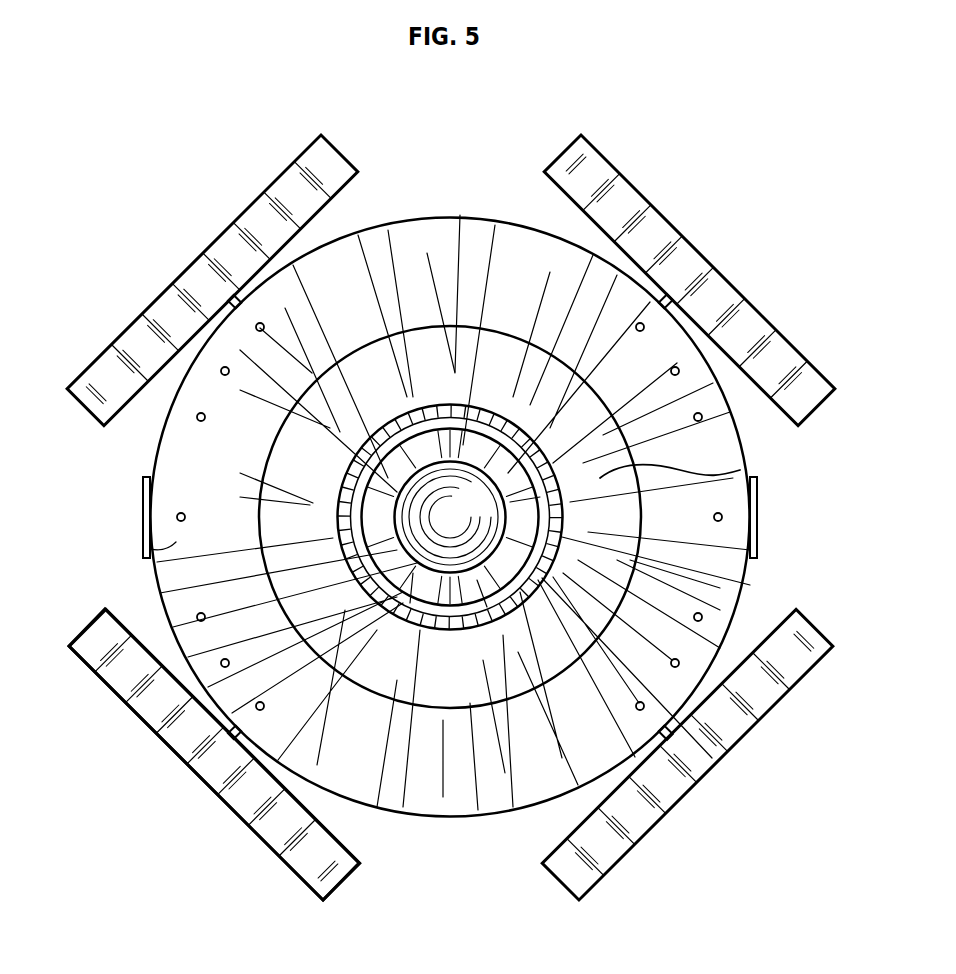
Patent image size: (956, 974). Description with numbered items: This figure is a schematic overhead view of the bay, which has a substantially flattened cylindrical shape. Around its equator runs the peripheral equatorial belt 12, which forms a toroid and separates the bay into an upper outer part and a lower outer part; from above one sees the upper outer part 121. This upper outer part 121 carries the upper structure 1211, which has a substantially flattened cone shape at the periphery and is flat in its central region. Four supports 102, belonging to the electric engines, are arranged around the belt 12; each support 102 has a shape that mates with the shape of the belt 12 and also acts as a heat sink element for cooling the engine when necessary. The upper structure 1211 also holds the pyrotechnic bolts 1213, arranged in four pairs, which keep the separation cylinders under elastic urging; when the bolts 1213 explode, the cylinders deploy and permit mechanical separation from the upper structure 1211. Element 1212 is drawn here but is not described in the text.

The peripheral equatorial belt 12 is at (92, 648).
The support 102 is at (295, 168).
The upper outer part 121 is at (139, 585).
The upper structure 1211 is at (150, 549).
The cable 1212 is at (740, 470).
The pyrotechnic bolts 1213 is at (202, 418).